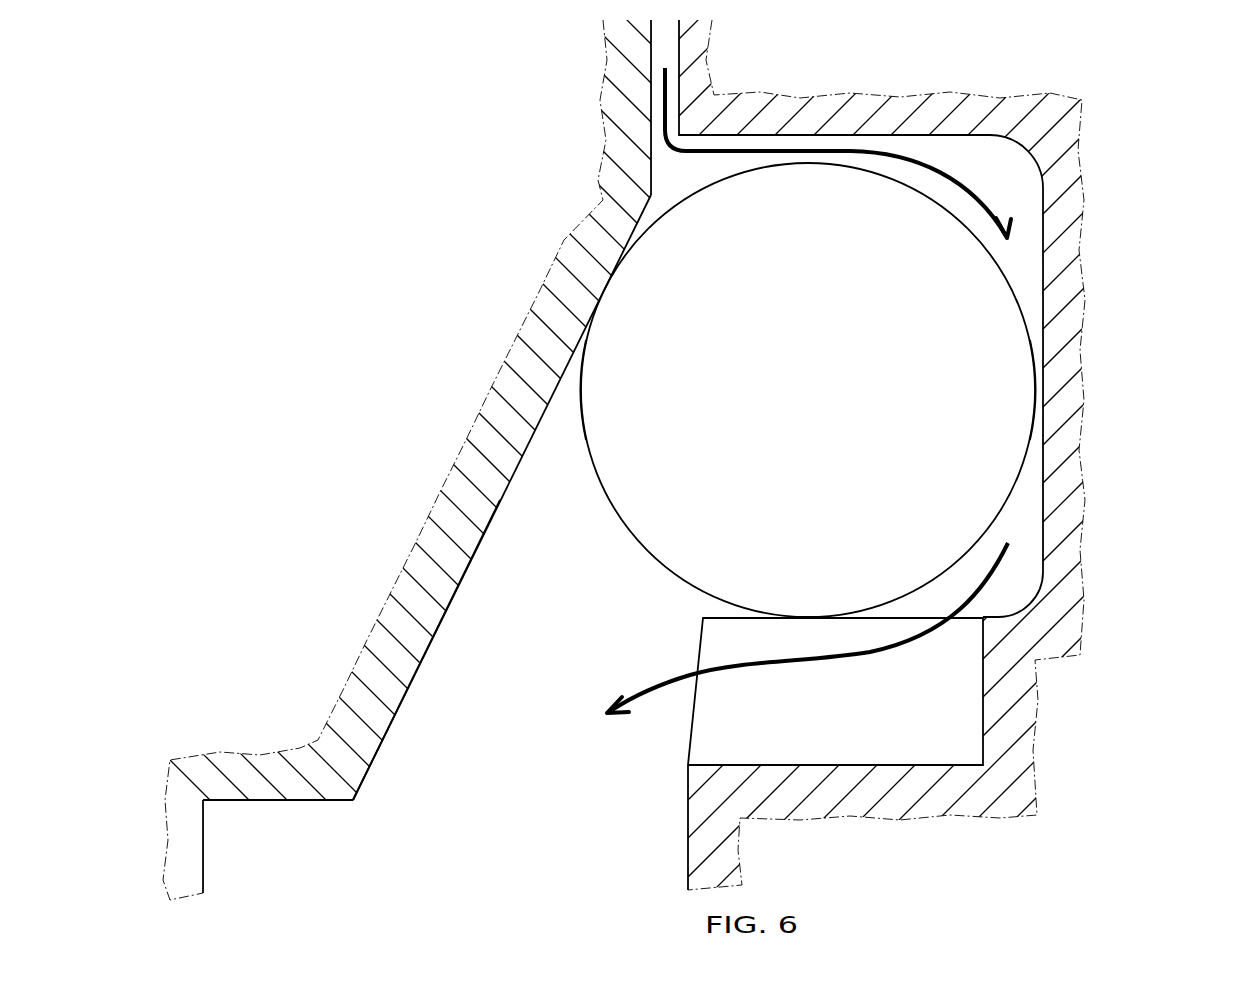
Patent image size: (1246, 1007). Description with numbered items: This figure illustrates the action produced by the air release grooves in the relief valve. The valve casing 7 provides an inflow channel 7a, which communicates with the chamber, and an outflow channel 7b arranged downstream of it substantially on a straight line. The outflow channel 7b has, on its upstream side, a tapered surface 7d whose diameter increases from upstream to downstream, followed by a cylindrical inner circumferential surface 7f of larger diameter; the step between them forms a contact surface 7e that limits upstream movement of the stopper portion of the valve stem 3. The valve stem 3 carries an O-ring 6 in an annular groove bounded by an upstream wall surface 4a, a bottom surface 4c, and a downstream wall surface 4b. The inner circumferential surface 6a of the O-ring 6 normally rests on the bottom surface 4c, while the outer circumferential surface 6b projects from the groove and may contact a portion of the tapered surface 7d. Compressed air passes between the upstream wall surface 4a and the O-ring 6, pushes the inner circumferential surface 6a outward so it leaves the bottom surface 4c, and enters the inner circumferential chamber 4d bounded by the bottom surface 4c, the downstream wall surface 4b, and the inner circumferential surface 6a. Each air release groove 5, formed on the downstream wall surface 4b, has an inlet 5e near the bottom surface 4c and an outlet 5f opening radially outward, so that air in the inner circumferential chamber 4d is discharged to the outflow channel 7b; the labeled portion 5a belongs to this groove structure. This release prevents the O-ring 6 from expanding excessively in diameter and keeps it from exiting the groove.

The valve stem 3 is at (1206, 396).
The upstream wall surface 4a is at (937, 135).
The downstream wall surface 4b is at (983, 606).
The bottom surface 4c is at (1043, 216).
The inner circumferential chamber 4d is at (1026, 296).
The air release groove 5 is at (835, 754).
The support portion 5a is at (882, 714).
The inlet 5e is at (944, 636).
The outlet 5f is at (713, 693).
The O-ring 6 is at (815, 402).
The inner circumferential surface 6a is at (1035, 406).
The outer circumferential surface 6b is at (580, 394).
The valve casing 7 is at (385, 416).
The inflow channel 7a is at (665, 47).
The outflow channel 7b is at (525, 710).
The tapered surface 7d is at (497, 515).
The contact surface 7e is at (308, 801).
The cylindrical inner circumferential surface 7f is at (205, 838).